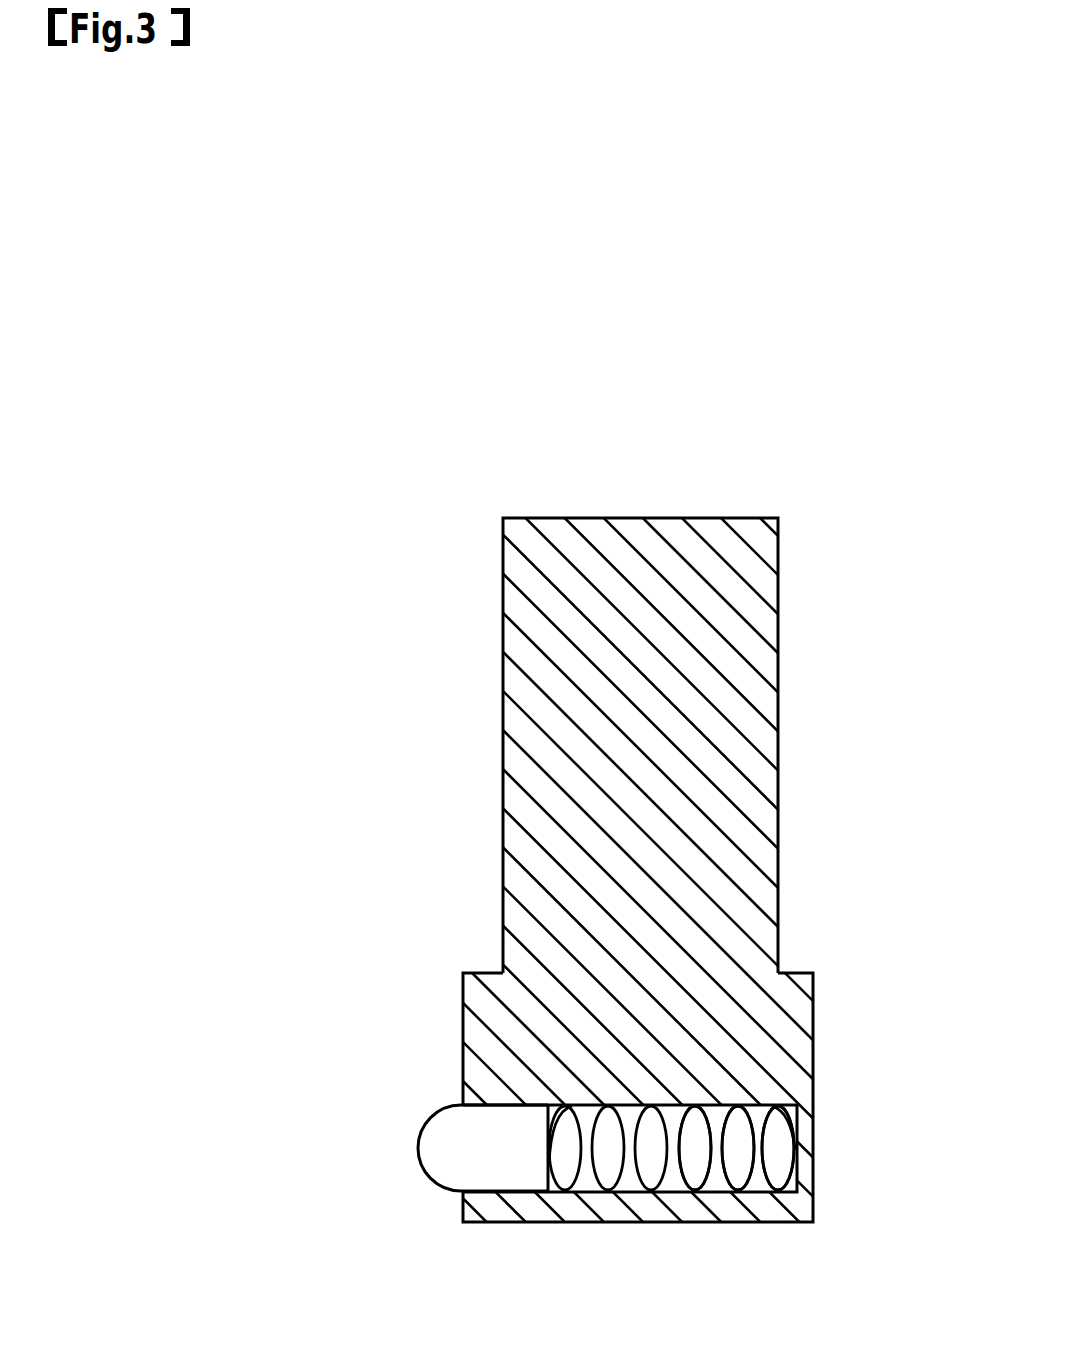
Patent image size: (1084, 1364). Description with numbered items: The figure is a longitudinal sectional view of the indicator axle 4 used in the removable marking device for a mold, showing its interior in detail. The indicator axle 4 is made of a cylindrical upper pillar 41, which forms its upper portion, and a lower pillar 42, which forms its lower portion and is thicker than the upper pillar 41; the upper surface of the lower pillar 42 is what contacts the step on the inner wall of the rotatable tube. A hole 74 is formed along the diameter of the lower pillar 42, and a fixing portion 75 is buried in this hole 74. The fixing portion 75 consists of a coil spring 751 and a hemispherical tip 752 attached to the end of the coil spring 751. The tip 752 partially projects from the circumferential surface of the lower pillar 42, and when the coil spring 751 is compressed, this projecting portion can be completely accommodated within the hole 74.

The indicator axle 4 is at (542, 890).
The upper pillar 41 is at (760, 766).
The lower pillar 42 is at (802, 1057).
The hole 74 is at (627, 1183).
The fixing portion 75 is at (439, 1139).
The coil spring 751 is at (738, 1183).
The tip 752 is at (438, 1157).